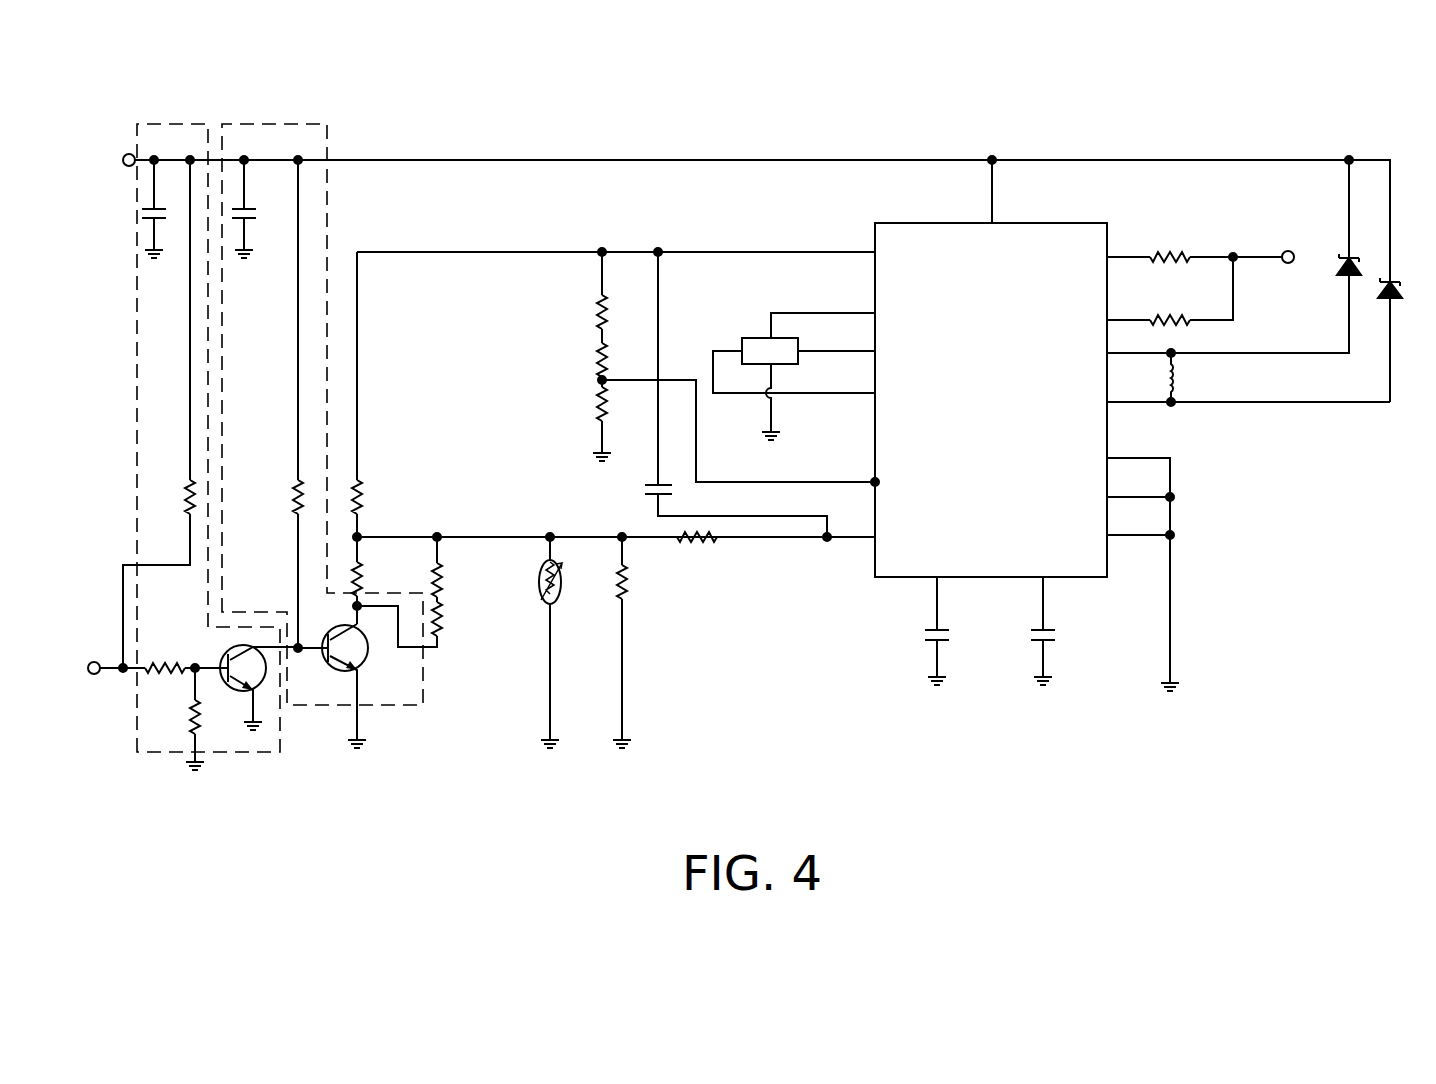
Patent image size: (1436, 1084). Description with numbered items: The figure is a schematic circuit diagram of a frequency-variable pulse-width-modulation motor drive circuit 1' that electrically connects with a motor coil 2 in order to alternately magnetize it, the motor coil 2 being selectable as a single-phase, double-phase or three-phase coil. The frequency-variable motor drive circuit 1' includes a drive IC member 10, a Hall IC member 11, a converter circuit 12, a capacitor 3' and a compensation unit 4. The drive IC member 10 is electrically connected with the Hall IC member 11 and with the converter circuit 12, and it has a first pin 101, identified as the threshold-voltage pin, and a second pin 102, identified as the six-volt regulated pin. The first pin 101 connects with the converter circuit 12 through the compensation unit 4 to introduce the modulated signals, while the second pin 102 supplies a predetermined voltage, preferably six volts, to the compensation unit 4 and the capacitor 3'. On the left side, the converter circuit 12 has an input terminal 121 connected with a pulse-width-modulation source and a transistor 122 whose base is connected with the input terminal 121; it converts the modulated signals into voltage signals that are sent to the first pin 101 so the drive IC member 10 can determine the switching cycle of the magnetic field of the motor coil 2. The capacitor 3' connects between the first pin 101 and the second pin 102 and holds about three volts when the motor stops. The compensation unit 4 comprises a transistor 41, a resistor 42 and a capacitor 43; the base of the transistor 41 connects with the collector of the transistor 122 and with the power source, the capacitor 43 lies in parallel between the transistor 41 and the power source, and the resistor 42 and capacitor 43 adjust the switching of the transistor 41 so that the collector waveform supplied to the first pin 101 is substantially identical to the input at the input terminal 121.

The frequency-variable PWM motor drive circuit 1' is at (747, 468).
The drive IC member 10 is at (1038, 223).
The first pin 101 is at (874, 537).
The second pin 102 is at (875, 252).
The Hall IC member 11 is at (753, 337).
The motor coil 2 is at (1181, 380).
The capacitor 3' is at (670, 394).
The compensation unit 4 is at (423, 673).
The transistor 41 is at (365, 668).
The resistor 42 is at (285, 497).
The capacitor 43 is at (260, 215).
The PWM converter circuit 12 is at (242, 755).
The PWM input terminal 121 is at (97, 681).
The transistor 122 is at (257, 687).